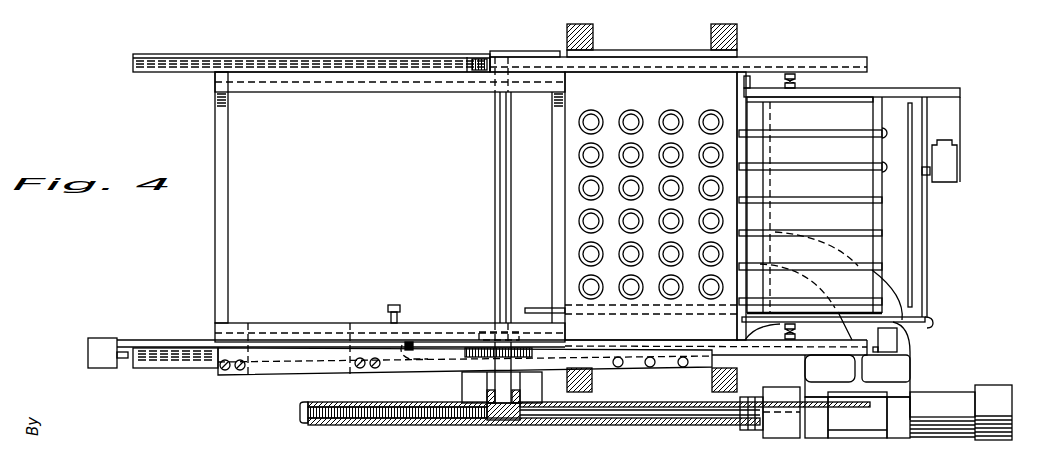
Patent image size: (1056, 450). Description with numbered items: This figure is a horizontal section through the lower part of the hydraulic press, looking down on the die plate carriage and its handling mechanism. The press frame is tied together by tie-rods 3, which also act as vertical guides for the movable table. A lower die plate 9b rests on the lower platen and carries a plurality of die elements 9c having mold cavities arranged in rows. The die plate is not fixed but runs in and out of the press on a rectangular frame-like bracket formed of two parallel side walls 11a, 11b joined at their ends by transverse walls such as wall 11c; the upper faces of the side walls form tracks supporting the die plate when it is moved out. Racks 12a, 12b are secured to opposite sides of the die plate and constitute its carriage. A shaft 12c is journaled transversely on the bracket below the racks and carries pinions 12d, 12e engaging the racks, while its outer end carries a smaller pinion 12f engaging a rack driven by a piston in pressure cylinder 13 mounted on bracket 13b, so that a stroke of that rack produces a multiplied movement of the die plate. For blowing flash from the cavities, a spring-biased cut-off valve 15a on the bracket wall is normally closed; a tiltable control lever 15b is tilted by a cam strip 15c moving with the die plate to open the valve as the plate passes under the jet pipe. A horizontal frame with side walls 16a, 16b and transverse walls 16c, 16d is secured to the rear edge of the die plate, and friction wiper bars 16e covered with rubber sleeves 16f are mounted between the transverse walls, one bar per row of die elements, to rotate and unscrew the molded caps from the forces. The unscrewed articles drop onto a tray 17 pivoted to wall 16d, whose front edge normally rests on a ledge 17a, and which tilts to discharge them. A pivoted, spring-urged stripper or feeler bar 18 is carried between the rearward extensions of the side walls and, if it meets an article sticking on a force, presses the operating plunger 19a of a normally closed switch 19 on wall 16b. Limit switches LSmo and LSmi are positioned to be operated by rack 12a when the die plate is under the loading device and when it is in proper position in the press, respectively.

The tie-rods 3 is at (593, 37).
The lower die plate 9b is at (722, 83).
The die elements 9c is at (599, 113).
The side wall 11a is at (554, 191).
The side wall 11b is at (442, 88).
The transverse wall 11c is at (228, 178).
The rack 12a is at (775, 352).
The rack 12b is at (834, 64).
The shaft 12c is at (495, 268).
The pinion 12d is at (469, 347).
The pinion 12e is at (481, 58).
The pinion 12f is at (518, 415).
The pressure cylinder 13 is at (865, 430).
The bracket 13b is at (912, 362).
The cut-off valve 15a is at (430, 370).
The control lever 15b is at (388, 304).
The cam strip 15c is at (536, 308).
The side wall 16a is at (924, 322).
The side wall 16b is at (869, 89).
The transverse wall 16c is at (752, 149).
The transverse wall 16d is at (869, 117).
The friction wiper bars 16e is at (883, 170).
The rubber sleeves 16f is at (813, 203).
The tray 17 is at (880, 213).
The ledge 17a is at (758, 183).
The stripper bar 18 is at (918, 262).
The switch 19 is at (947, 164).
The operating plunger 19a is at (930, 174).
The limit switch LSmo is at (88, 360).
The limit switch LSmi is at (898, 350).